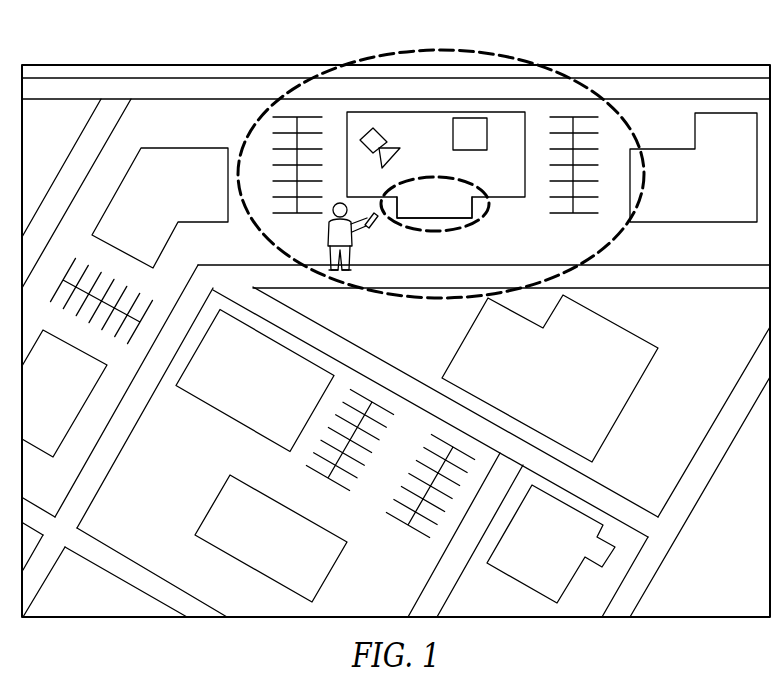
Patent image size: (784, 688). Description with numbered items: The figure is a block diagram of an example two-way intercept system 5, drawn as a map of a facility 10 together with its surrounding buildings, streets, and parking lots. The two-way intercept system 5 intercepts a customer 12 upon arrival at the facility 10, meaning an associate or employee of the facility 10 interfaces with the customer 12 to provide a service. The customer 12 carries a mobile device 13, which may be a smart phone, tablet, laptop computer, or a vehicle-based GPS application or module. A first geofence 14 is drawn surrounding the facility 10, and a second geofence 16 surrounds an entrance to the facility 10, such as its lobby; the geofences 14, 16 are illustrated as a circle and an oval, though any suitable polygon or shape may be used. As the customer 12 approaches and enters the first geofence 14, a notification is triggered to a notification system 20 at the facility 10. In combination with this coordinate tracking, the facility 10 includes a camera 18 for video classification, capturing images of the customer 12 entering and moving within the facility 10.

The two-way intercept system 5 is at (186, 31).
The facility 10 is at (436, 165).
The customer 12 is at (328, 233).
The mobile device 13 is at (372, 228).
The first geofence 14 is at (457, 50).
The second geofence 16 is at (468, 228).
The camera 18 is at (390, 134).
The notification system 20 is at (470, 134).